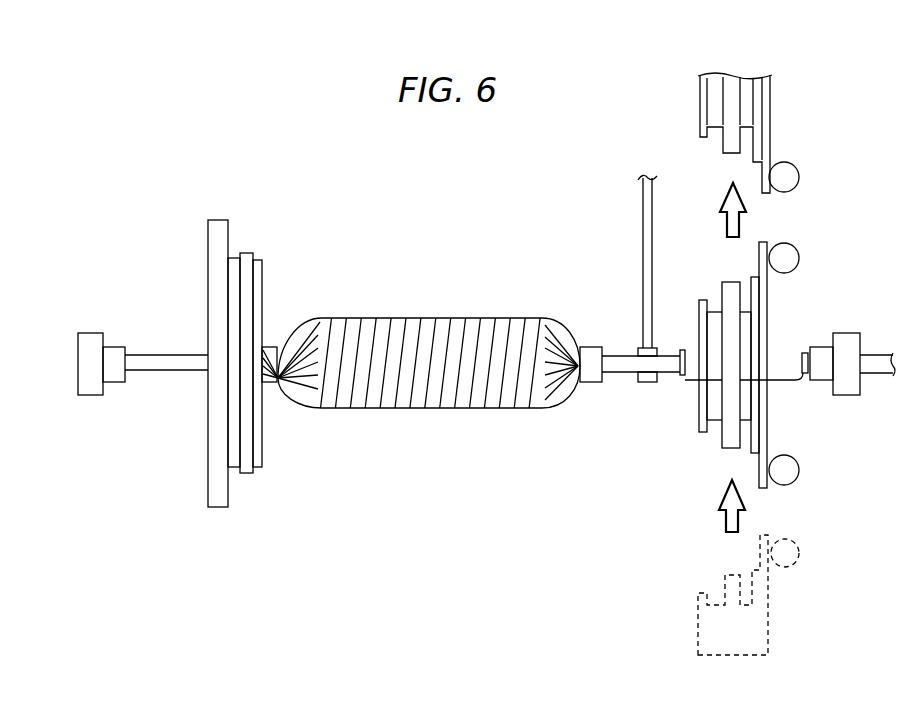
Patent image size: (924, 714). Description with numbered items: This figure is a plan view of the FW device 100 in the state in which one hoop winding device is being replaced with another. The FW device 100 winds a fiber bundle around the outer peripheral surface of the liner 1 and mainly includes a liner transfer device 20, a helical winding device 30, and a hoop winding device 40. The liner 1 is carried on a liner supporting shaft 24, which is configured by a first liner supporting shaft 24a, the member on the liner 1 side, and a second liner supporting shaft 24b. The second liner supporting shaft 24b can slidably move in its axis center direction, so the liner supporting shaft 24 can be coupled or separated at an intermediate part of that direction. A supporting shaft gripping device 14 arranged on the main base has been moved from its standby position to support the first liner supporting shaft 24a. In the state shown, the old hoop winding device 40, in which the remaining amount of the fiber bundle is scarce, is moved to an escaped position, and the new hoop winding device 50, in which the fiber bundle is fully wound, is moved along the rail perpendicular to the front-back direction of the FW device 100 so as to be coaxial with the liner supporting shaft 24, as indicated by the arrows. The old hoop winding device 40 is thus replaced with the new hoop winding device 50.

The FW device 100 is at (91, 163).
The liner 1 is at (420, 300).
The supporting shaft gripping device 14 is at (637, 350).
The liner transfer device 20 is at (97, 322).
The liner supporting shaft 24 is at (677, 407).
The first liner supporting shaft 24a is at (632, 373).
The second liner supporting shaft 24b is at (688, 380).
The helical winding device 30 is at (228, 194).
The hoop winding device 40 is at (813, 72).
The hoop winding device 50 is at (813, 228).